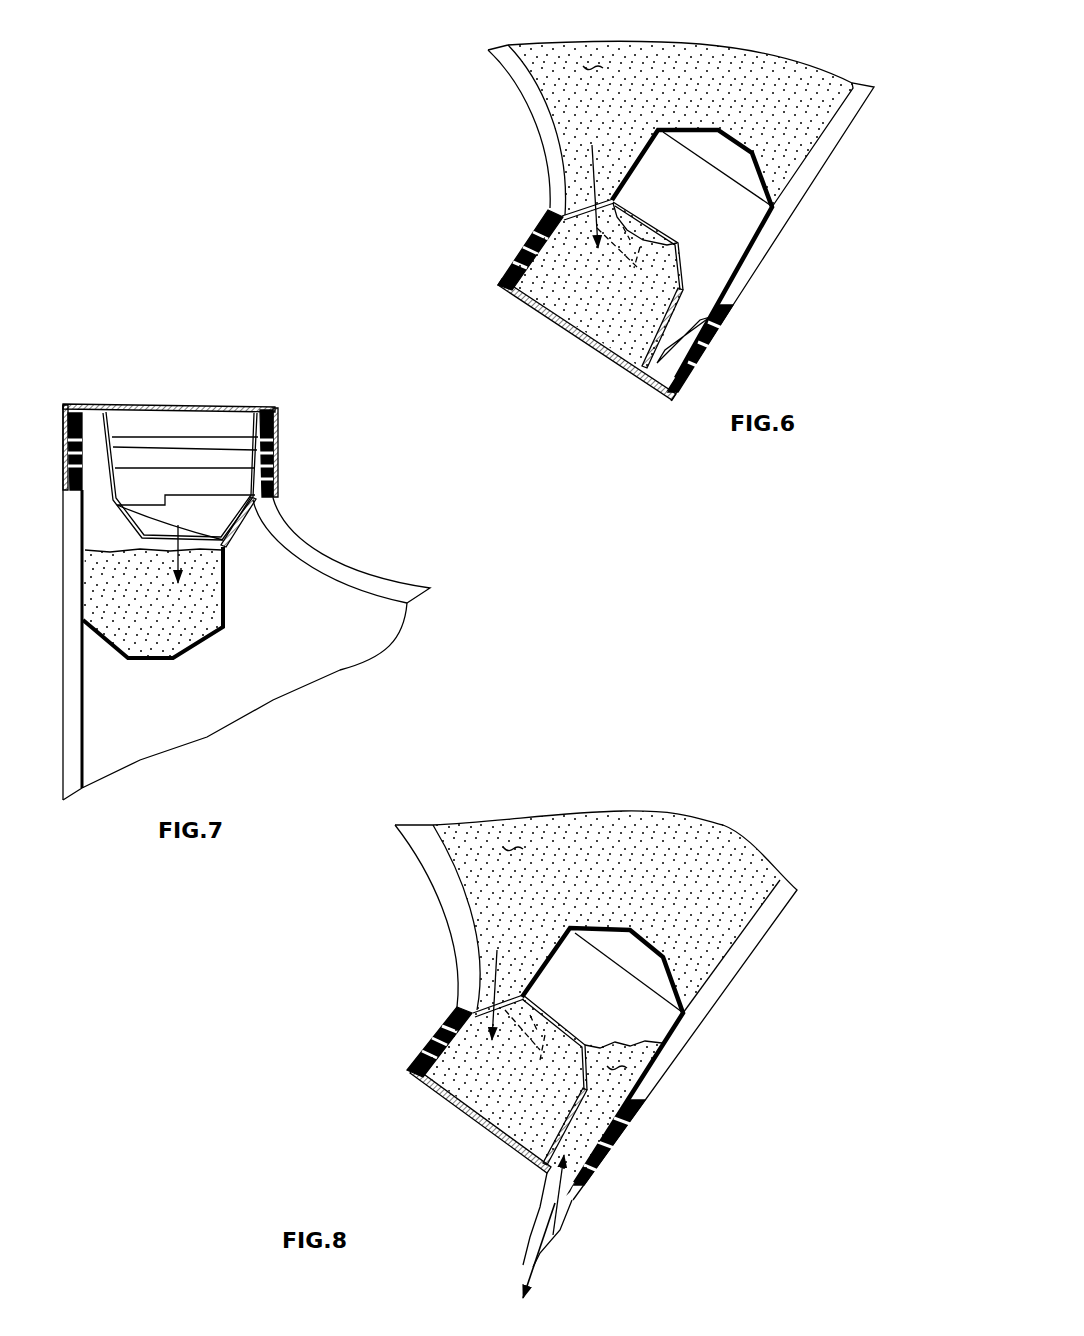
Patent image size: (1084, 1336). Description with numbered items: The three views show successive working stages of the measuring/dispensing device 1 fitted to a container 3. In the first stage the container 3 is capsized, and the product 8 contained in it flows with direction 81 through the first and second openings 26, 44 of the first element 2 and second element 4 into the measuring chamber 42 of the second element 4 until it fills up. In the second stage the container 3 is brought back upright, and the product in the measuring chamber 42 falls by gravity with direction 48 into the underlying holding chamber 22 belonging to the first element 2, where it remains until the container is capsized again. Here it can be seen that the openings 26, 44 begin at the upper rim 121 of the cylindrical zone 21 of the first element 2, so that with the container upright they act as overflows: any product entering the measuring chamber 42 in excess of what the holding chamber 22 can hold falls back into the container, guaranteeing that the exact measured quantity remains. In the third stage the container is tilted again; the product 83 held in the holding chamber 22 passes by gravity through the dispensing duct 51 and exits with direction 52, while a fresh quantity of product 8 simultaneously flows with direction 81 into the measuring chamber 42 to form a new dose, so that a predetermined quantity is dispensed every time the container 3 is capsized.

In FIG. 6, the powder container / dispensing device 1 is at (455, 257).
In FIG. 7, the powder container / dispensing device 1 is at (96, 379).
In FIG. 8, the powder container / dispensing device 1 is at (360, 1094).
In FIG. 6, the first element 2 is at (783, 165).
In FIG. 7, the first element 2 is at (245, 626).
In FIG. 8, the first element 2 is at (596, 1005).
In FIG. 6, the container 3 is at (525, 82).
In FIG. 7, the container 3 is at (297, 540).
In FIG. 8, the container 3 is at (408, 830).
In FIG. 6, the second element 4 is at (697, 292).
In FIG. 7, the second element 4 is at (98, 517).
In FIG. 6, the product 8 is at (585, 66).
In FIG. 8, the product 8 is at (512, 843).
In FIG. 7, the cylindrical zone 21 is at (80, 597).
In FIG. 7, the holding chamber 22 is at (108, 603).
In FIG. 8, the holding chamber 22 is at (600, 990).
In FIG. 6, the first opening 26 is at (511, 193).
In FIG. 7, the first opening 26 is at (390, 582).
In FIG. 6, the second opening 44 is at (578, 221).
In FIG. 7, the second opening 44 is at (237, 526).
In FIG. 6, the measuring chamber 42 is at (590, 315).
In FIG. 7, the measuring chamber 42 is at (178, 458).
In FIG. 8, the measuring chamber 42 is at (492, 1093).
In FIG. 7, the direction of fall 48 is at (180, 533).
In FIG. 6, the dispensing duct 51 is at (690, 325).
In FIG. 8, the dispensing duct 51 is at (553, 1228).
In FIG. 8, the exit direction 52 is at (533, 1248).
In FIG. 6, the flow direction 81 is at (593, 163).
In FIG. 8, the flow direction 81 is at (497, 970).
In FIG. 8, the held product 83 is at (618, 1069).
In FIG. 7, the upper rim 121 is at (238, 552).